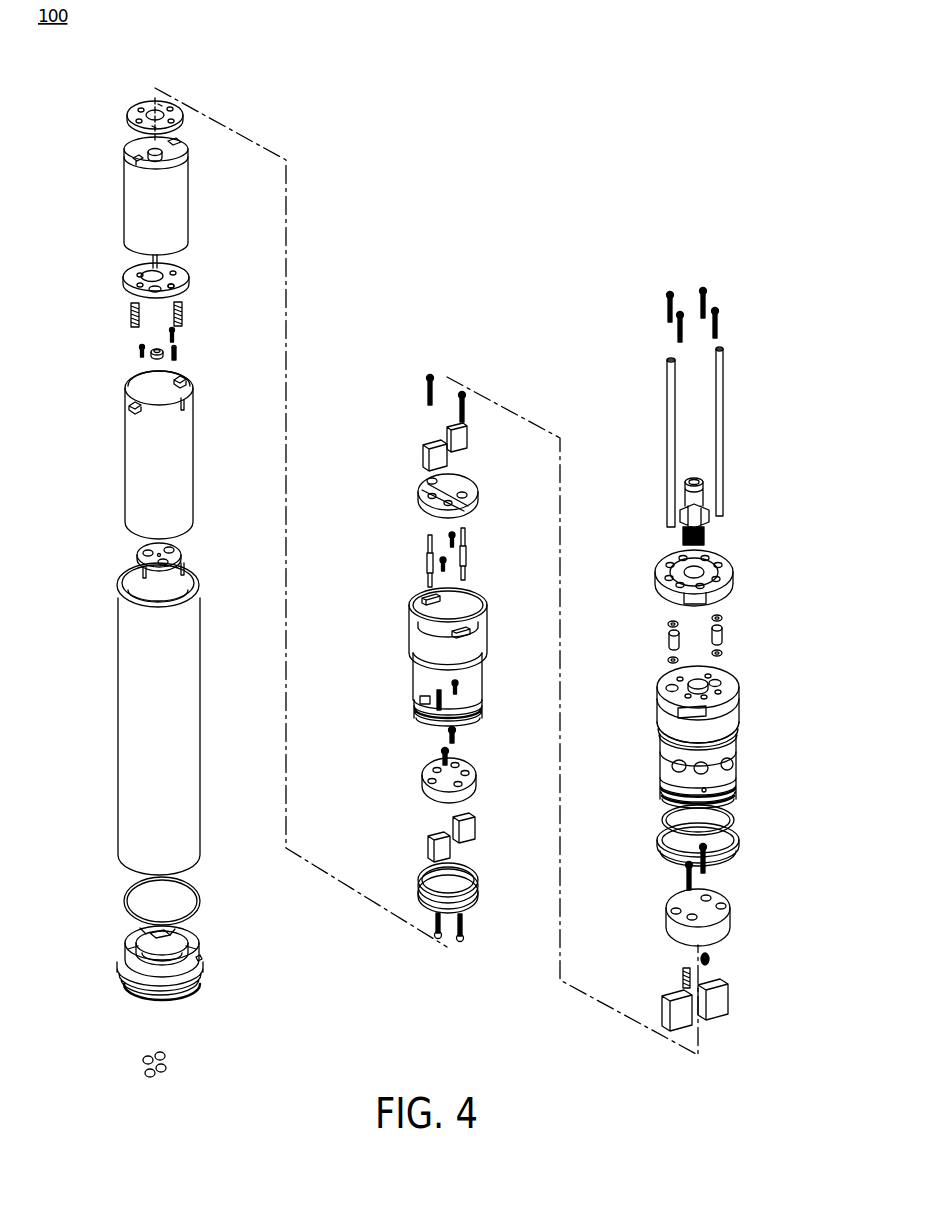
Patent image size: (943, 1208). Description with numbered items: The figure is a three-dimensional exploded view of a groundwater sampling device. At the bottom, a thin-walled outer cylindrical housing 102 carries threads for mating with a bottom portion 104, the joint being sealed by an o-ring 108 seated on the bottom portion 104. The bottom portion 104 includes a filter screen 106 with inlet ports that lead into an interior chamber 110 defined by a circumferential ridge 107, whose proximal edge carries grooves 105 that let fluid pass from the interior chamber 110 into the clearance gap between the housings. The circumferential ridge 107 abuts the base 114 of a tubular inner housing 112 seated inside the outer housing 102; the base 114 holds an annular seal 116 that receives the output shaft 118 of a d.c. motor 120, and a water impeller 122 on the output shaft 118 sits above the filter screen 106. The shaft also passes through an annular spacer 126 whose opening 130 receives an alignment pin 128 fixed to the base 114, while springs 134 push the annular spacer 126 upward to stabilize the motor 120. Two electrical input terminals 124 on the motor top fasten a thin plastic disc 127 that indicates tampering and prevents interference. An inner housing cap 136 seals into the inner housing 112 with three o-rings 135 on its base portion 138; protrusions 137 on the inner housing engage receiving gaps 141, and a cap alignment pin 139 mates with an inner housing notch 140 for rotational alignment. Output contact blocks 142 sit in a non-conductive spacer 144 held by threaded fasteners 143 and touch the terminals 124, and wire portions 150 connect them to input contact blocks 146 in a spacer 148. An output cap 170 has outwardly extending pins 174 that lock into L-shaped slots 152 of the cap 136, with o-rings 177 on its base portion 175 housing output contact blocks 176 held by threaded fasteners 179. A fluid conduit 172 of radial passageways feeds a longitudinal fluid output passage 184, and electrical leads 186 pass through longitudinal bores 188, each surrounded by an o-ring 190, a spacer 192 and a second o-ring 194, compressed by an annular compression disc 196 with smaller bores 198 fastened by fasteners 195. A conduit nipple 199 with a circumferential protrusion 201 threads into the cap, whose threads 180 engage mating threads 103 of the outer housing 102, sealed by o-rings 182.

The outer cylindrical housing 102 is at (118, 640).
The mating threads 103 is at (199, 580).
The bottom portion 104 is at (125, 949).
The grooves 105 is at (198, 948).
The filter screen 106 is at (152, 985).
The circumferential ridge 107 is at (202, 957).
The o-ring 108 is at (124, 897).
The interior chamber 110 is at (165, 945).
The inner housing 112 is at (125, 453).
The base of inner housing 114 is at (160, 547).
The annular seal 116 is at (152, 350).
The output shaft 118 is at (160, 270).
The d.c. motor 120 is at (190, 183).
The water impeller 122 is at (178, 565).
The electrical input terminals 124 is at (174, 142).
The annular spacer 126 is at (176, 281).
The thin plastic disc 127 is at (166, 106).
The alignment pin 128 is at (178, 346).
The opening 130 is at (178, 287).
The springs 134 is at (184, 308).
The o-rings 135 is at (479, 880).
The inner housing cap 136 is at (483, 655).
The protrusions 137 is at (129, 407).
The base portion of inner housing cap 138 is at (484, 708).
The cap alignment pin 139 is at (484, 698).
The inner housing notch 140 is at (186, 405).
The receiving gaps 141 is at (415, 700).
The output contact blocks 142 is at (480, 826).
The threaded fasteners 143 is at (466, 925).
The non-conductive spacer 144 is at (478, 777).
The input contact blocks 146 is at (468, 437).
The non-conductive spacer 148 is at (478, 492).
The wire portions 150 is at (436, 586).
The L-shaped slots 152 is at (484, 623).
The output cap 170 is at (739, 710).
The fluid conduit 172 is at (738, 757).
The outwardly extending pins 174 is at (737, 778).
The base portion of output cap 175 is at (661, 773).
The output contact blocks 176 is at (724, 988).
The o-rings 177 is at (735, 826).
The threaded fasteners 179 is at (708, 858).
The threads 180 is at (658, 729).
The o-rings 182 is at (657, 834).
The fluid output passage 184 is at (700, 682).
The electrical leads 186 is at (722, 435).
The longitudinal bores 188 is at (708, 683).
The o-ring 190 is at (711, 618).
The spacer 192 is at (711, 641).
The second o-ring 194 is at (712, 655).
The fasteners 195 is at (720, 310).
The annular compression disc 196 is at (734, 578).
The longitudinal bores 198 is at (705, 555).
The conduit nipple 199 is at (704, 498).
The circumferential protrusion 201 is at (689, 479).